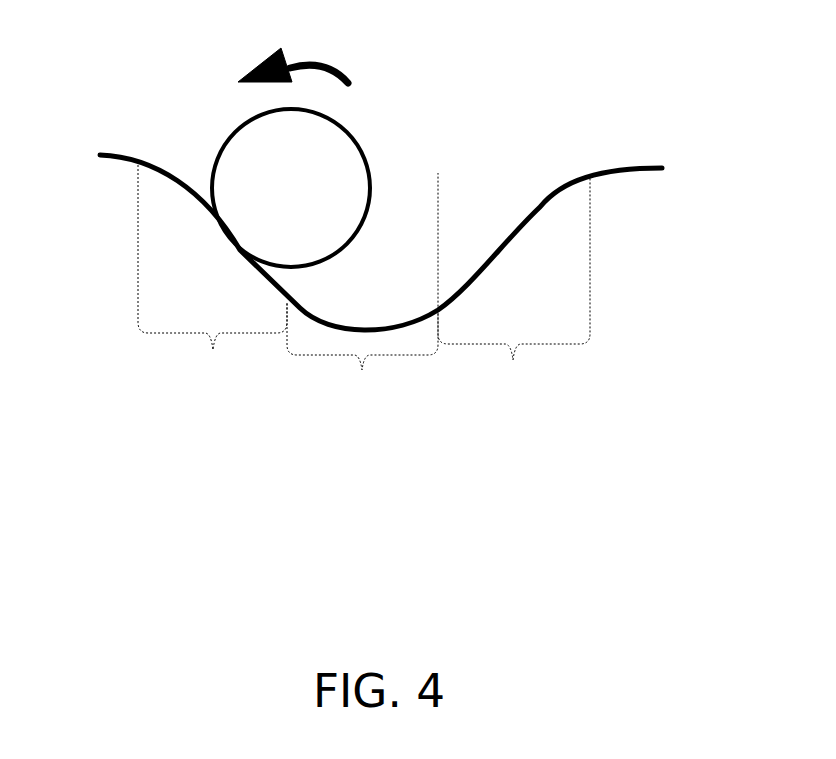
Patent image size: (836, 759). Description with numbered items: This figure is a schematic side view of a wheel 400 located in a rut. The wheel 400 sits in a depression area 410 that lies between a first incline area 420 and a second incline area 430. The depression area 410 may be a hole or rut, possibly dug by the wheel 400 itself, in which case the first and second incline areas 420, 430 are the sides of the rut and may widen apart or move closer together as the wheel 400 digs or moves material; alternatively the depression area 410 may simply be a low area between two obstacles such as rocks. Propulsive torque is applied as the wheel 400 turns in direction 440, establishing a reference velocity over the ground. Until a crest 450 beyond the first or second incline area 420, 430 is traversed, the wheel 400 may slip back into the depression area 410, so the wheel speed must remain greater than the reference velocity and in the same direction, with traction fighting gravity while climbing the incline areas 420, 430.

The wheel 400 is at (368, 162).
The depression area 410 is at (362, 286).
The first incline area 420 is at (212, 275).
The second incline area 430 is at (514, 284).
The direction 440 is at (323, 62).
The crest 450 is at (100, 155).